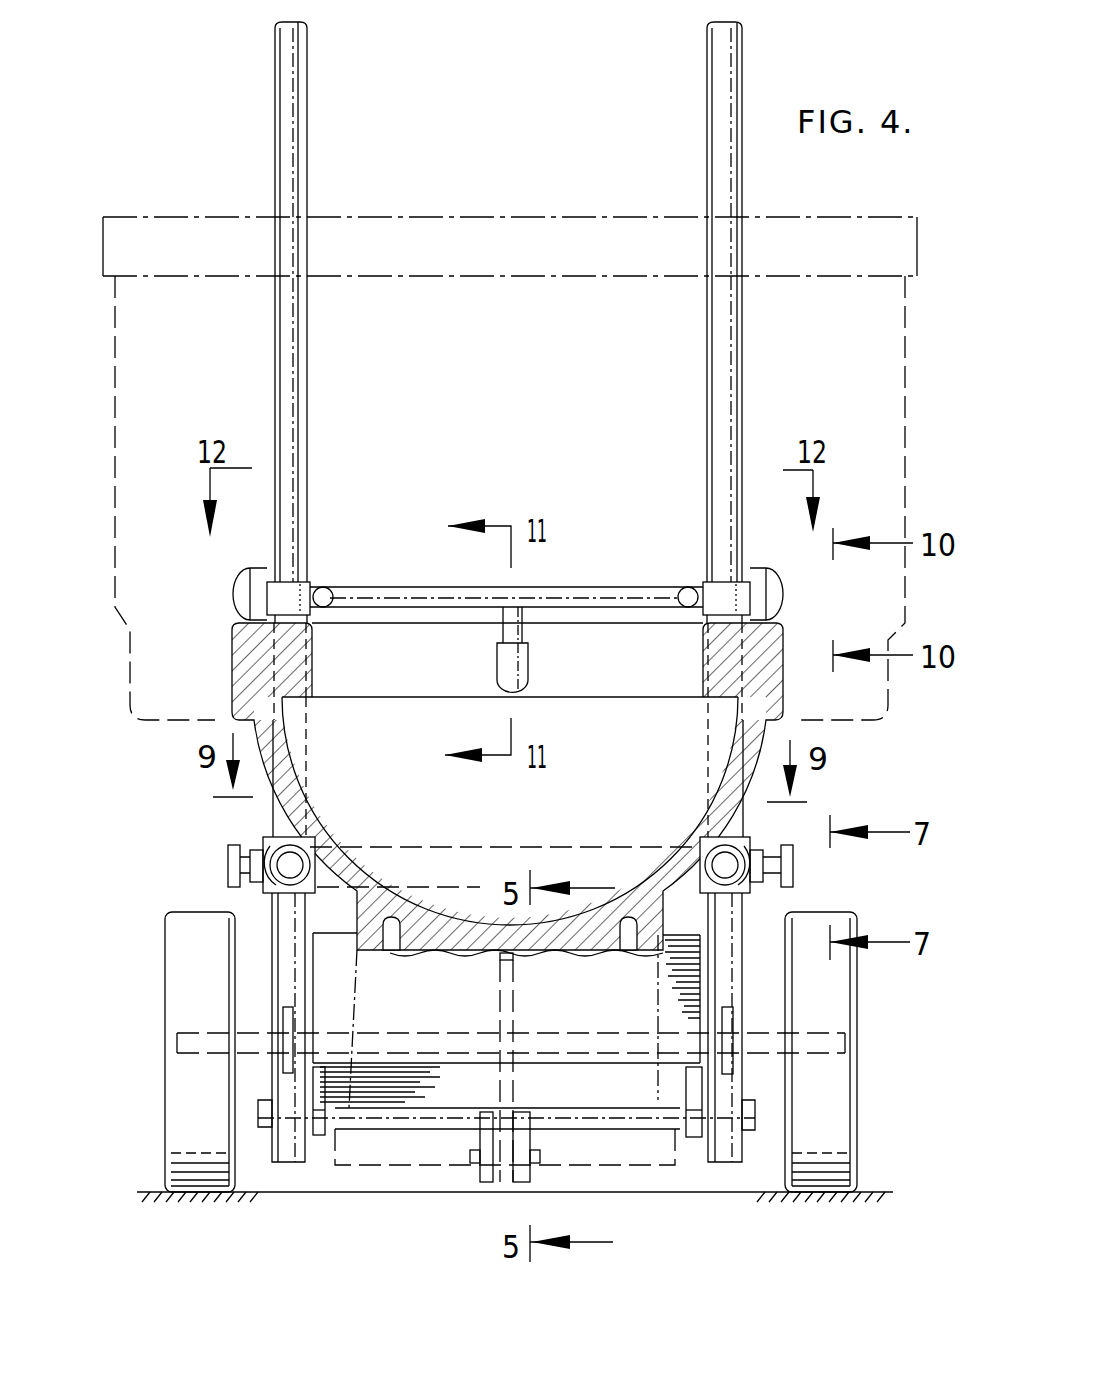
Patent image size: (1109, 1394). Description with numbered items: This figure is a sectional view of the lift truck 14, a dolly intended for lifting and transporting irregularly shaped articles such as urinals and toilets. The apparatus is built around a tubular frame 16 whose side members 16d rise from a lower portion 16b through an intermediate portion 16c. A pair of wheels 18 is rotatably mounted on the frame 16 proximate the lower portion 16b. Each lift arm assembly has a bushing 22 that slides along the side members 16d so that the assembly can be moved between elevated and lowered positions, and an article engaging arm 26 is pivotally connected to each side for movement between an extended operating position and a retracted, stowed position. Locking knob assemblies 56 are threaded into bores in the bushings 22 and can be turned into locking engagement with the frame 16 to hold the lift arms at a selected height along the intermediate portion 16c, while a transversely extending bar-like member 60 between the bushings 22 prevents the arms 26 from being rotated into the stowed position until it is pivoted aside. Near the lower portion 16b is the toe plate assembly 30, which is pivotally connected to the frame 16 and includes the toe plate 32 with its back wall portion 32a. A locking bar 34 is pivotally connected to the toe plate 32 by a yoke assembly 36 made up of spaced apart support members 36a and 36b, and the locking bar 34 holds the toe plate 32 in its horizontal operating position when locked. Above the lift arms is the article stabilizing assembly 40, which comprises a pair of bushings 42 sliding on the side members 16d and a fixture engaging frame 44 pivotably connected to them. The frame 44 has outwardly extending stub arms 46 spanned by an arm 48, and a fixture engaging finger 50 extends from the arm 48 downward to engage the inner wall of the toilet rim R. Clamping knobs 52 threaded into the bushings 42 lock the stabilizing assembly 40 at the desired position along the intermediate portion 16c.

The lift truck 14 is at (243, 190).
The tubular frame 16 is at (748, 30).
The lower portion 16b is at (292, 1148).
The intermediate portion 16c is at (307, 393).
The side members 16d is at (300, 103).
The wheels 18 is at (178, 950).
The bushing 22 is at (300, 897).
The article engaging arm 26 is at (266, 838).
The toe plate assembly 30 is at (381, 983).
The toe plate 32 is at (472, 1003).
The back wall portion 32a is at (632, 1091).
The locking bar 34 is at (515, 1001).
The yoke assembly 36 is at (533, 1178).
The support member 36a is at (530, 1141).
The support member 36b is at (487, 1170).
The article stabilizing assembly 40 is at (576, 574).
The bushings 42 is at (291, 598).
The fixture engaging frame 44 is at (477, 590).
The stub arms 46 is at (327, 593).
The arm 48 is at (618, 600).
The fixture engaging finger 50 is at (502, 670).
The clamping knobs 52 is at (235, 597).
The locking knob assemblies 56 is at (228, 865).
The bar-like member 60 is at (392, 845).
The toilet rim R is at (313, 642).